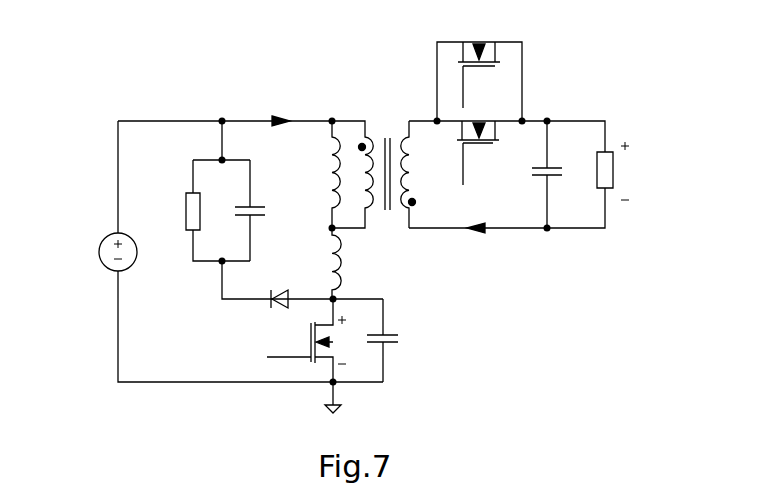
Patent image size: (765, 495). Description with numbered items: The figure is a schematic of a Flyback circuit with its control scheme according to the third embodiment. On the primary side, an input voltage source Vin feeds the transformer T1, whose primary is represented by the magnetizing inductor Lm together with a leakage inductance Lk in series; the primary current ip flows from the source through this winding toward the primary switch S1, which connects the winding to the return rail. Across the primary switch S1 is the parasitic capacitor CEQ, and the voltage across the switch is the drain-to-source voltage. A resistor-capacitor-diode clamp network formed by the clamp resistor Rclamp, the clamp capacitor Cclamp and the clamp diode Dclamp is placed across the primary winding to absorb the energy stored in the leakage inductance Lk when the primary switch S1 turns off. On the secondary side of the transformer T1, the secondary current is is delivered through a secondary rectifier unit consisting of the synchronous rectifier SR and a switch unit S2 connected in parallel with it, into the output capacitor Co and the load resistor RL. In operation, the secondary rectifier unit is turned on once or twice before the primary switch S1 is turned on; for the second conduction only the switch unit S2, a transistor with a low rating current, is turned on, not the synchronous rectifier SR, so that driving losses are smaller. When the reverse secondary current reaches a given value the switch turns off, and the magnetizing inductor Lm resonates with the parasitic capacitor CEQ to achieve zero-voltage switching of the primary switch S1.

The input voltage source Vin is at (103, 252).
The clamp resistor Rclamp is at (193, 210).
The clamp capacitor Cclamp is at (270, 210).
The clamp diode Dclamp is at (275, 290).
The primary current ip is at (281, 133).
The magnetizing inductor Lm is at (325, 174).
The leakage inductance Lk is at (323, 263).
The transformer T1 is at (374, 173).
The primary switch S1 is at (300, 342).
The parasitic capacitor CEQ is at (395, 343).
The switch unit S2 is at (479, 75).
The synchronous rectifier SR is at (478, 153).
The secondary current is is at (476, 221).
The output capacitor Co is at (538, 175).
The load resistor RL is at (603, 171).